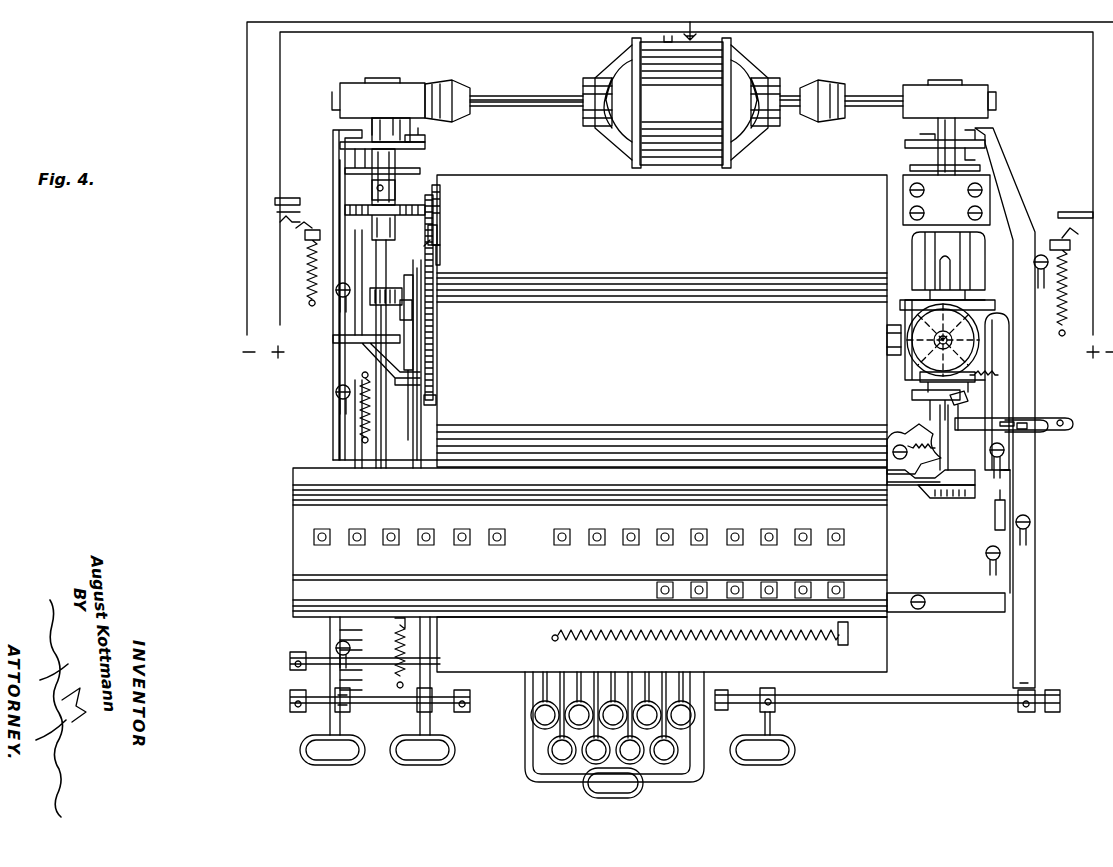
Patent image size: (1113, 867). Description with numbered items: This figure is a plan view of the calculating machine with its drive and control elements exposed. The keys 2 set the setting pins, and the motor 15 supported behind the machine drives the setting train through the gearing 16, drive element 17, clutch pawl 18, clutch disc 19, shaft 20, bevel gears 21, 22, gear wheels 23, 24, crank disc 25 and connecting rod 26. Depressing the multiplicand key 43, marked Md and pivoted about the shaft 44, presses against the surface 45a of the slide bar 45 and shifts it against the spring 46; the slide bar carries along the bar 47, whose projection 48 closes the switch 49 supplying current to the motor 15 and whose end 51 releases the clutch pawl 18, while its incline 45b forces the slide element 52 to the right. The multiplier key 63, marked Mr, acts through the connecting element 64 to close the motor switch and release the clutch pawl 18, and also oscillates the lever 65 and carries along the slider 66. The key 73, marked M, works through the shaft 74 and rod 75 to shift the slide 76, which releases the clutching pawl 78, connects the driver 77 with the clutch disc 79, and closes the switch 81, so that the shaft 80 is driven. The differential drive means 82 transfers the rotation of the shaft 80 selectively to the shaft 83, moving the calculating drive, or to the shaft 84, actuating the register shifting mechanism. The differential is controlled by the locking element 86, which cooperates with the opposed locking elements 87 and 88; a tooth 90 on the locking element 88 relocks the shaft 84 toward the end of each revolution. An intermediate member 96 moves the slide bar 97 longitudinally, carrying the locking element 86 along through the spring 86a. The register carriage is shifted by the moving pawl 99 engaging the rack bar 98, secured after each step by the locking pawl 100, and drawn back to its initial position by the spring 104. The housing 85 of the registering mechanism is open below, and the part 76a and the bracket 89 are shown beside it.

The keys 2 is at (548, 750).
The motor 15 is at (664, 103).
The gearing 16 is at (400, 85).
The drive element 17 is at (392, 136).
The clutch pawl 18 is at (418, 140).
The clutch disc 19 is at (410, 149).
The shaft 20 is at (374, 192).
The bevel gear 21 is at (396, 222).
The bevel gear 22 is at (441, 278).
The gear wheel 23 is at (434, 262).
The gear wheel 24 is at (434, 362).
The crank disc 25 is at (436, 392).
The connecting rod 26 is at (390, 456).
The multiplicand key 43 is at (326, 764).
The shaft 44 is at (388, 706).
The slide bar 45 is at (345, 420).
The surface 45a is at (350, 695).
The incline 45b is at (362, 350).
The spring 46 is at (360, 452).
The bar 47 is at (340, 322).
The projection 48 is at (309, 250).
The switch 49 is at (296, 198).
The end 51 is at (338, 130).
The slide element 52 is at (434, 322).
The multiplier key 63 is at (414, 764).
The connecting element 64 is at (422, 445).
The lever 65 is at (438, 200).
The slider 66 is at (440, 228).
The key 73 is at (768, 765).
The shaft 74 is at (898, 694).
The rod 75 is at (1024, 712).
The slide 76 is at (1003, 183).
The spring 76a is at (1068, 252).
The driver 77 is at (942, 140).
The clutching pawl 78 is at (910, 142).
The clutch disc 79 is at (920, 168).
The shaft 80 is at (912, 226).
The switch 81 is at (1082, 210).
The differential drive means 82 is at (968, 252).
The shaft 83 is at (890, 352).
The shaft 84 is at (938, 428).
The housing of the registering mechanism 85 is at (865, 532).
The locking element 86 is at (978, 385).
The spring 86a is at (1008, 455).
The locking element 87 is at (956, 342).
The locking element 88 is at (920, 396).
The bracket 89 is at (1003, 345).
The tooth 90 is at (962, 404).
The intermediate member 96 is at (945, 604).
The slide bar 97 is at (990, 525).
The rack bar 98 is at (893, 488).
The moving pawl 99 is at (945, 496).
The locking pawl 100 is at (892, 442).
The spring 104 is at (676, 640).